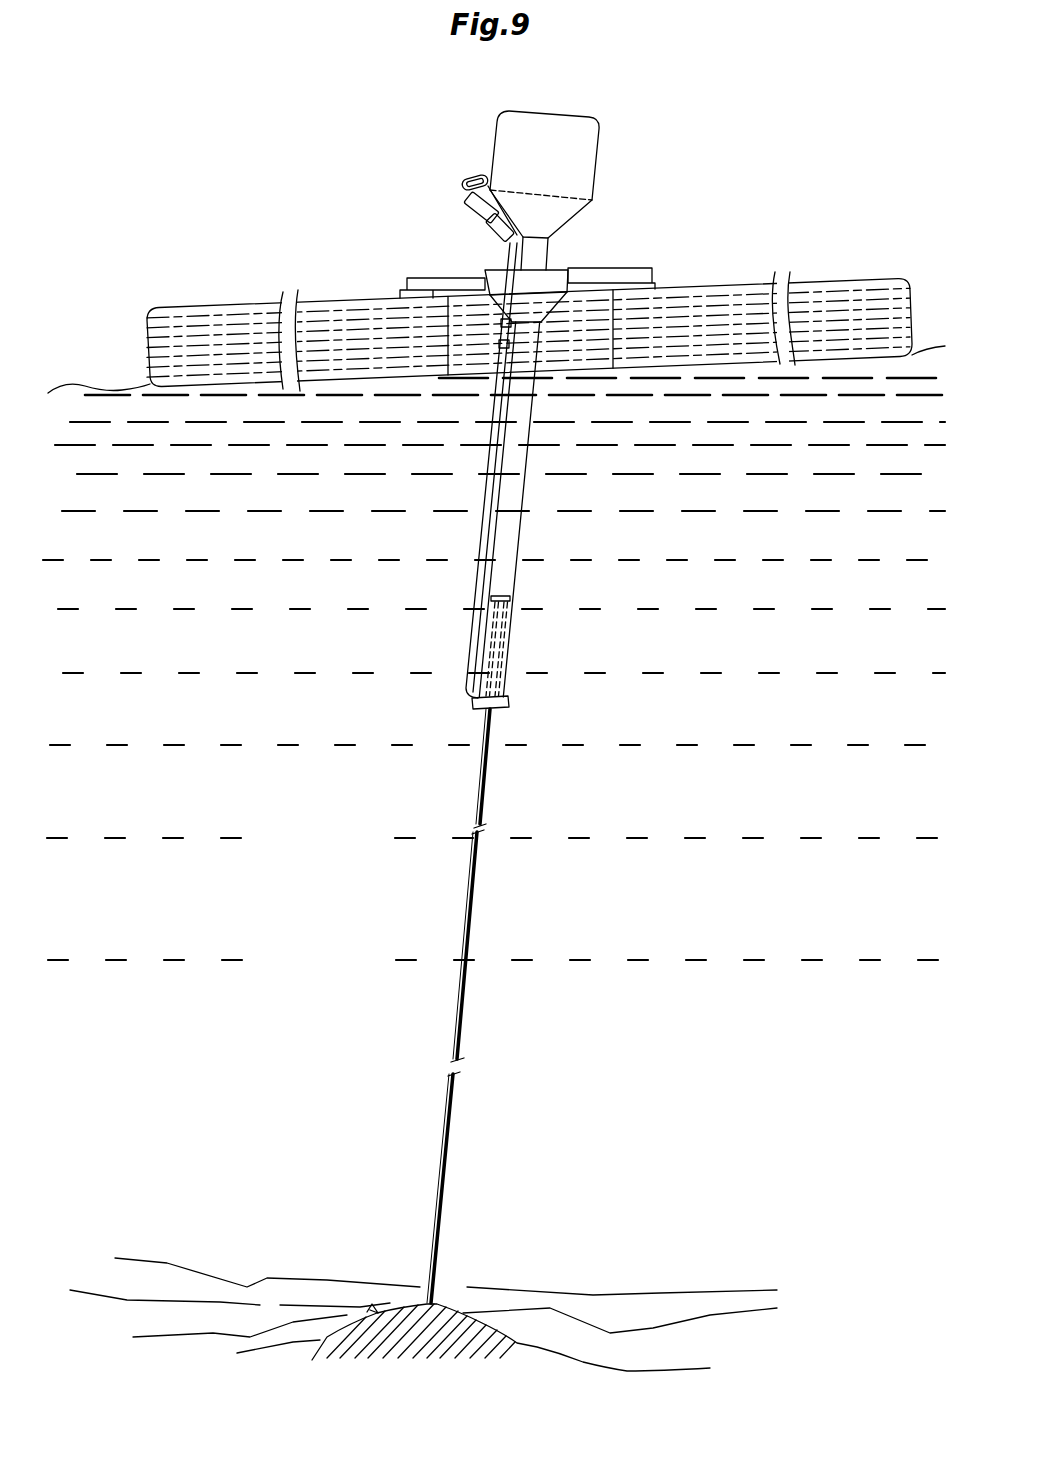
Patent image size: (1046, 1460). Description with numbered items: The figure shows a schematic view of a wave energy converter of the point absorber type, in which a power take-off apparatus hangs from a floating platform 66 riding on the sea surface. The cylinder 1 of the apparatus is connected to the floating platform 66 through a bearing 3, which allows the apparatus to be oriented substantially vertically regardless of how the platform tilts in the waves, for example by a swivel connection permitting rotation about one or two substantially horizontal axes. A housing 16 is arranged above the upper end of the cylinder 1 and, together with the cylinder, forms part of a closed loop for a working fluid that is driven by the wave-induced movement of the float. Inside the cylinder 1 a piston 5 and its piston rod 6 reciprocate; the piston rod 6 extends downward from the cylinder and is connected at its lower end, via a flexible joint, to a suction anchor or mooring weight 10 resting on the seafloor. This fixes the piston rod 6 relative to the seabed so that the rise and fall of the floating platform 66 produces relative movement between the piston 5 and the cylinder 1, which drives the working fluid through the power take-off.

The housing 16 is at (587, 150).
The bearing 3 is at (531, 310).
The floating device or platform 66 is at (248, 318).
The cylinder 1 is at (520, 533).
The piston 5 is at (503, 598).
The piston rod 6 is at (487, 778).
The suction anchor/suction bucket/piles/mooring weight 10 is at (433, 1330).